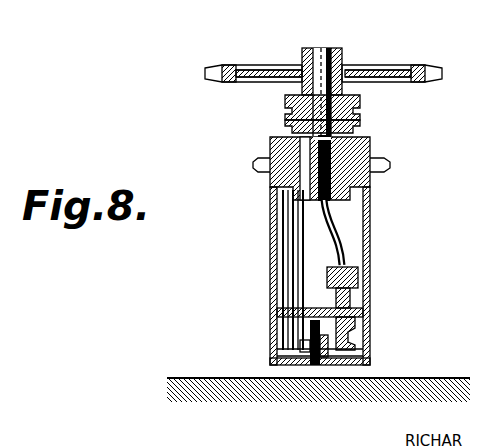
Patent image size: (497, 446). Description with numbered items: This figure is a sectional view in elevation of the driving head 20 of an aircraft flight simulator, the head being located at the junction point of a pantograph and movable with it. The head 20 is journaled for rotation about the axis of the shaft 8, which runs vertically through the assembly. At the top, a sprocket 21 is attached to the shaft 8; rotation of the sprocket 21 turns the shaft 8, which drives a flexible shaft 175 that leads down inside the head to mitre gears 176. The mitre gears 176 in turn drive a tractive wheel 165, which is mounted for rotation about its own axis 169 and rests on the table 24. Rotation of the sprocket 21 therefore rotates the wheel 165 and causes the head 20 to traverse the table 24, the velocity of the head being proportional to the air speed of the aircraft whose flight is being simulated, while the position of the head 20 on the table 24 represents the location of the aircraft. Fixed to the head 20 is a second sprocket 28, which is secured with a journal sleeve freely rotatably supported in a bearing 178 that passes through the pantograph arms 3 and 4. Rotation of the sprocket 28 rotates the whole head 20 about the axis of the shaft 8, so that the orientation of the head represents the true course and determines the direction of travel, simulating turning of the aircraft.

The shaft 8 is at (322, 48).
The sprocket 21 is at (205, 73).
The pantograph arm 3 is at (358, 116).
The pantograph arm 4 is at (358, 130).
The bearing 178 is at (275, 137).
The sprocket 28 is at (391, 167).
The driving head 20 is at (371, 282).
The flexible shaft 175 is at (342, 243).
The axis 169 is at (368, 352).
The tractive wheel 165 is at (312, 366).
The mitre gears 176 is at (327, 366).
The table 24 is at (199, 378).